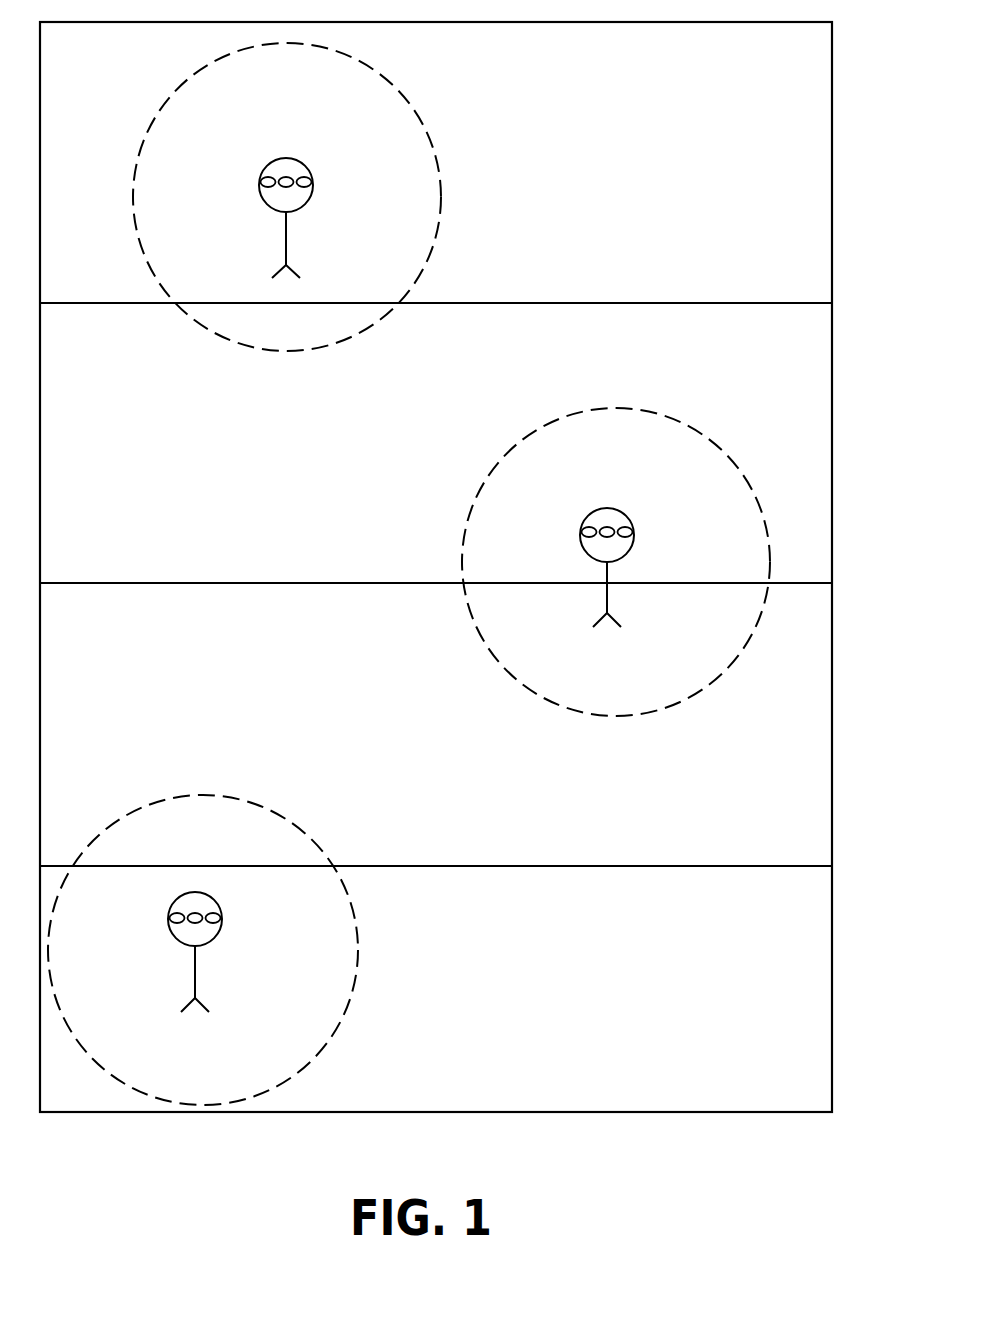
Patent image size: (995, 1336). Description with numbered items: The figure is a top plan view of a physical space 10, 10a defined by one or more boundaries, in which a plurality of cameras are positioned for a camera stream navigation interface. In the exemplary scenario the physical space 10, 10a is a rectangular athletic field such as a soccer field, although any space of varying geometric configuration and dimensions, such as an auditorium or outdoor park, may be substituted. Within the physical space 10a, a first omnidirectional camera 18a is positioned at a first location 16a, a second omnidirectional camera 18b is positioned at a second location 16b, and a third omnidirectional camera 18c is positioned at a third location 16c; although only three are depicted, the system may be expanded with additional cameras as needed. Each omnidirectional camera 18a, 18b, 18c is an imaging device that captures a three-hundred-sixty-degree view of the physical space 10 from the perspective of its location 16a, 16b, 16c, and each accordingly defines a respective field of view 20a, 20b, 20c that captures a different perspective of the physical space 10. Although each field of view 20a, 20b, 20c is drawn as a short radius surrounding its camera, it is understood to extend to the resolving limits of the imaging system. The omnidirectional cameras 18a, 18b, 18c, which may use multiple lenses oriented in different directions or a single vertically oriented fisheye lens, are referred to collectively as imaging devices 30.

The physical space 10 is at (832, 237).
The physical space 10a is at (469, 550).
The first location 16a is at (356, 1036).
The second location 16b is at (622, 724).
The third location 16c is at (296, 358).
The first omnidirectional camera 18a is at (195, 973).
The second omnidirectional camera 18b is at (607, 603).
The third omnidirectional camera 18c is at (286, 241).
The field of view 20a is at (357, 958).
The field of view 20b is at (705, 440).
The field of view 20c is at (437, 247).
The imaging devices 30 is at (444, 585).